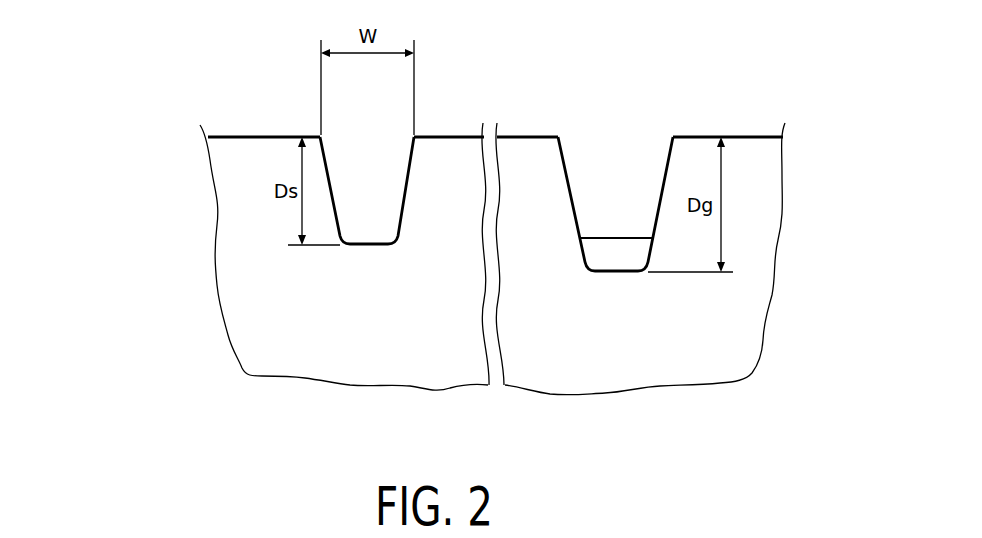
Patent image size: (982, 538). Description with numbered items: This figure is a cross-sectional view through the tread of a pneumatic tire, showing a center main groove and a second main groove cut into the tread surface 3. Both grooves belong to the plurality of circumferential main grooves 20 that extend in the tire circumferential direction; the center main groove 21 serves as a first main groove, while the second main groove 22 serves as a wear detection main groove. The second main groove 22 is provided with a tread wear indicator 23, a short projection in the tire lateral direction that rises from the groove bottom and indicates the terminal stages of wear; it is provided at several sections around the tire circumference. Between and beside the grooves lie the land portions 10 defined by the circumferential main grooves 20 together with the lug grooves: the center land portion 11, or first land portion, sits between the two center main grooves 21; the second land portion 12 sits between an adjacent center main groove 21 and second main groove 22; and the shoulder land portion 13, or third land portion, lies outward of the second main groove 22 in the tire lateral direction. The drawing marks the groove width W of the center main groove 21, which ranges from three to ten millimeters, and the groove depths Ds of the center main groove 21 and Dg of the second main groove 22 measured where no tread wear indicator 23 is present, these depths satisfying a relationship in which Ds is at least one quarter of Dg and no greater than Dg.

The tread surface 3 is at (234, 136).
The land portions 10 is at (505, 106).
The center land portion 11 is at (270, 152).
The second land portion 12 is at (452, 148).
The shoulder land portion 13 is at (758, 150).
The circumferential main grooves 20 is at (496, 174).
The center main groove 21 is at (405, 178).
The second main groove 22 is at (567, 177).
The tread wear indicator 23 is at (616, 248).